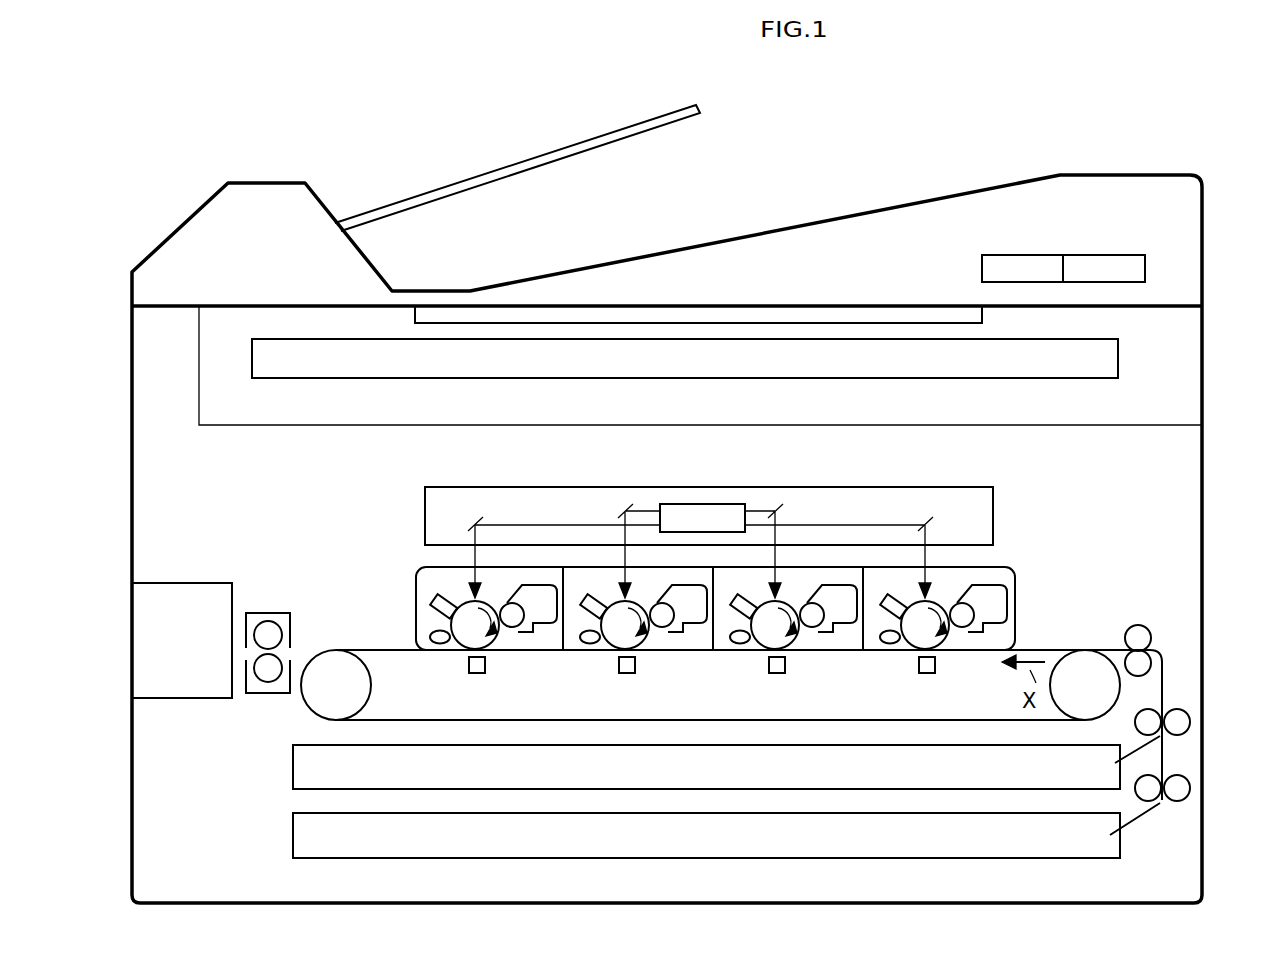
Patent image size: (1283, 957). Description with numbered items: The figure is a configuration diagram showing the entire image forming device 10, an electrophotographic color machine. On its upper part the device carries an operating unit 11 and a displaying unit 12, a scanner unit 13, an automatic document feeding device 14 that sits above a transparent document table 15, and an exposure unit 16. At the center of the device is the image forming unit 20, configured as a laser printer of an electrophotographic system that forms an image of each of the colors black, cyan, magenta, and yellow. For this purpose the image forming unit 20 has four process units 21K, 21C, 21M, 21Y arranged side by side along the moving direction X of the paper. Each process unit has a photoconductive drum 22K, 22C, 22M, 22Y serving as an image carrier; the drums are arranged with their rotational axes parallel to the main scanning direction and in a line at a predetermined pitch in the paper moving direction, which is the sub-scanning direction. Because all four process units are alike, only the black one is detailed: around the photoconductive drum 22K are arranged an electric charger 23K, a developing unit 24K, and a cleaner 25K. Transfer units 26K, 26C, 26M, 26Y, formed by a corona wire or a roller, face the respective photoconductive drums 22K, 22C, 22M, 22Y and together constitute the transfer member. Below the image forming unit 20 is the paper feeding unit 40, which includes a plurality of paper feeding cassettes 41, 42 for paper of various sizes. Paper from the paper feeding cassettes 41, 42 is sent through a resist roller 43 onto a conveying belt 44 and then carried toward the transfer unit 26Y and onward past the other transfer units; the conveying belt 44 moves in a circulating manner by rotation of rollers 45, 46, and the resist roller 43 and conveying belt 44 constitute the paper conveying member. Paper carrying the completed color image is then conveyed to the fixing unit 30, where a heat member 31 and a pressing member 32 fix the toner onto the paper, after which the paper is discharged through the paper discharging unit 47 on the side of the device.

The image forming device 10 is at (778, 181).
The operating unit 11 is at (1022, 255).
The displaying unit 12 is at (1097, 255).
The scanner unit 13 is at (1118, 357).
The automatic document feeding device 14 is at (193, 213).
The transparent document table 15 is at (829, 318).
The exposure unit 16 is at (993, 505).
The image forming unit 20 is at (1075, 577).
The process unit 21K is at (420, 573).
The process unit 21C is at (675, 642).
The process unit 21M is at (825, 642).
The process unit 21Y is at (975, 642).
The photoconductive drum 22K is at (465, 638).
The photoconductive drum 22C is at (615, 638).
The photoconductive drum 22M is at (765, 638).
The photoconductive drum 22Y is at (915, 638).
The electric charger 23K is at (432, 605).
The developing unit 24K is at (518, 622).
The cleaner 25K is at (430, 637).
The transfer unit 26K is at (478, 673).
The transfer unit 26C is at (628, 673).
The transfer unit 26M is at (778, 673).
The transfer unit 26Y is at (928, 673).
The fixing unit 30 is at (266, 613).
The heat member 31 is at (285, 618).
The pressing member 32 is at (272, 690).
The paper feeding unit 40 is at (1180, 762).
The paper feeding cassette 41 is at (706, 767).
The paper feeding cassette 42 is at (706, 835).
The resist roller 43 is at (1138, 625).
The conveying belt 44 is at (1044, 650).
The roller 45 is at (1120, 690).
The roller 46 is at (312, 712).
The paper discharging unit 47 is at (165, 583).